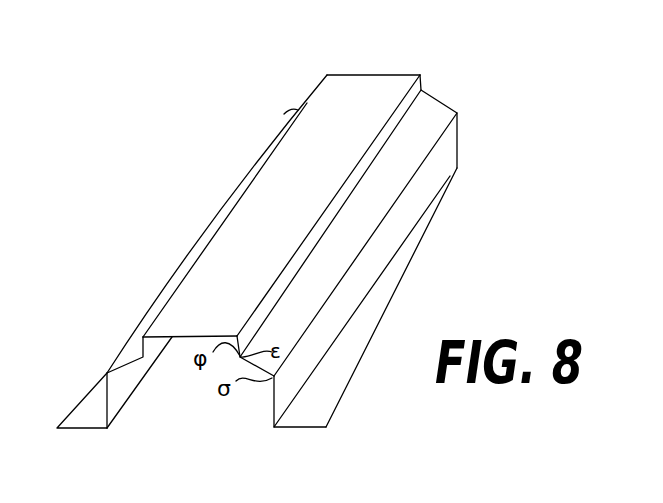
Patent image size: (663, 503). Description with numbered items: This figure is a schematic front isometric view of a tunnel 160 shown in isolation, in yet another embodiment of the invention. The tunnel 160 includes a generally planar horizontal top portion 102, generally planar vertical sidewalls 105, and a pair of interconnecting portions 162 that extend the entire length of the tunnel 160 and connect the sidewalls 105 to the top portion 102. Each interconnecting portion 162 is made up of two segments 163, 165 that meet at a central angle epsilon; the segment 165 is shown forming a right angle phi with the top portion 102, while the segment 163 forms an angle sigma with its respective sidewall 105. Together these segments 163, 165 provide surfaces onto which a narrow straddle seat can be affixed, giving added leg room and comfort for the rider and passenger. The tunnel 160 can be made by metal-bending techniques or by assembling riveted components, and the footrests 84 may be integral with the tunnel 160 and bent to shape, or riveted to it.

The tunnel 160 is at (214, 130).
The top portion 102 is at (390, 84).
The sidewalls 105 is at (445, 161).
The interconnecting portions 162 is at (346, 233).
The segment 165 is at (340, 204).
The segment 163 is at (342, 238).
The footrests 84 is at (100, 413).